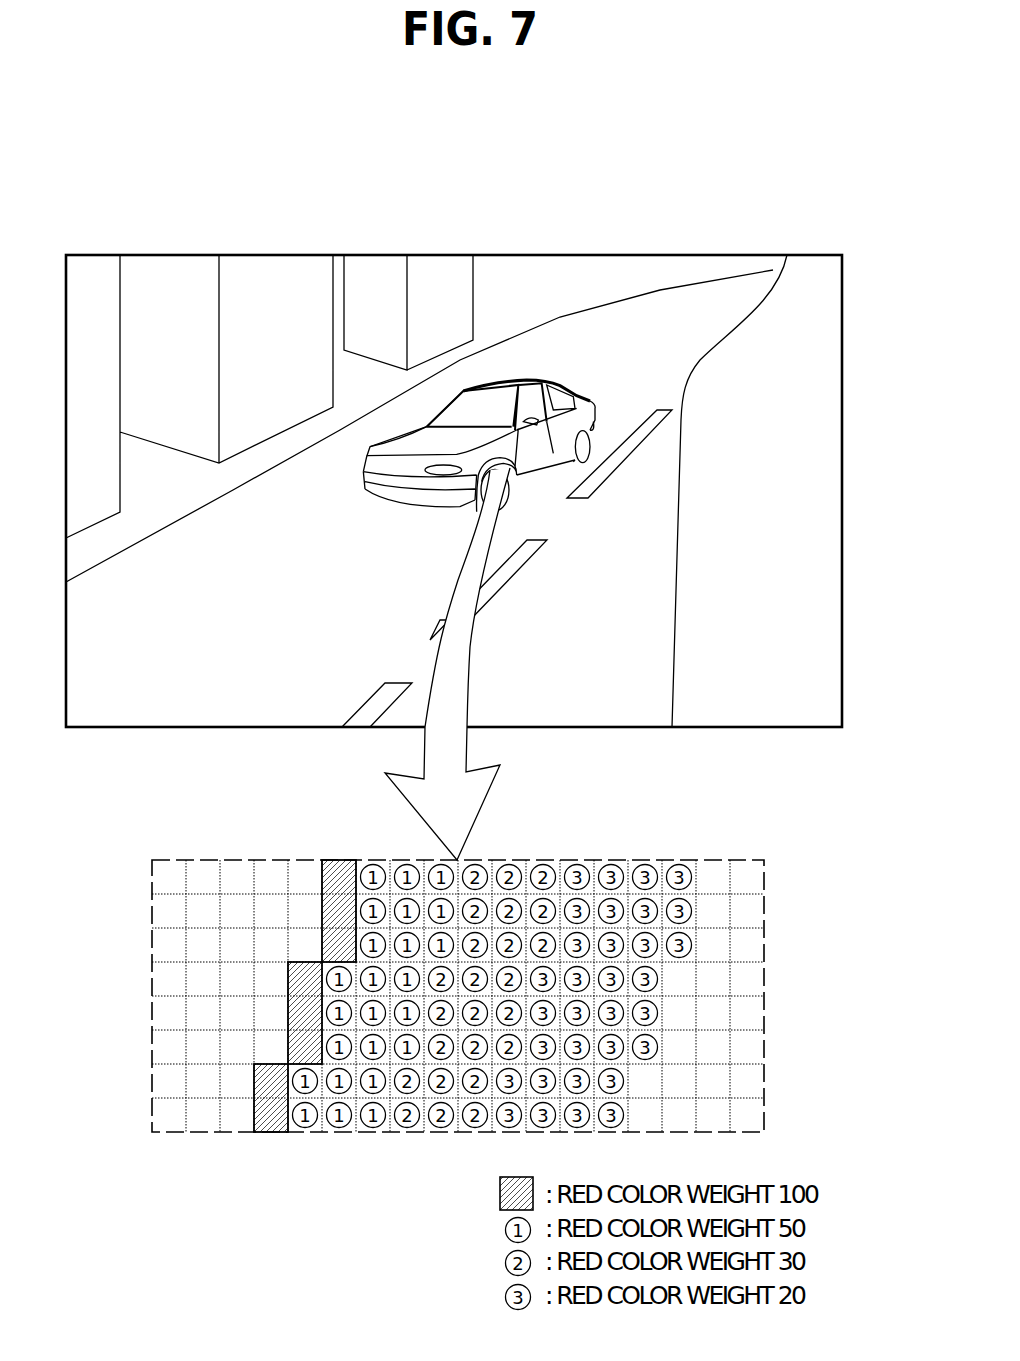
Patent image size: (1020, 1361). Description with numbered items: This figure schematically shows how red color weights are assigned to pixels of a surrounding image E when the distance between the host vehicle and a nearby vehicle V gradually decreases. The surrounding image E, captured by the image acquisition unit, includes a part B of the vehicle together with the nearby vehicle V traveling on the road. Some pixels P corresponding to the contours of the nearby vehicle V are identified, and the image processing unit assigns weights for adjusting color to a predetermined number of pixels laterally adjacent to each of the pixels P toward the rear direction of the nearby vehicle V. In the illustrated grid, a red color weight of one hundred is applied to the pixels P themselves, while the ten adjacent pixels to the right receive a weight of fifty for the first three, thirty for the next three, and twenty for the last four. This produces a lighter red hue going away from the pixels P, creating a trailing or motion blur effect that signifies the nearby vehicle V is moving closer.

The part of the vehicle B is at (828, 610).
The surrounding image E is at (742, 255).
The nearby vehicle V is at (585, 383).
The pixels corresponding to the contours P is at (343, 908).